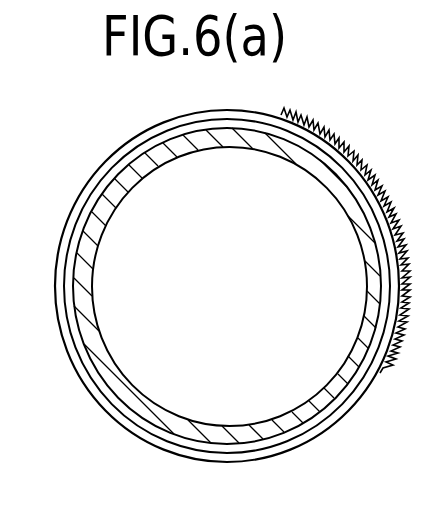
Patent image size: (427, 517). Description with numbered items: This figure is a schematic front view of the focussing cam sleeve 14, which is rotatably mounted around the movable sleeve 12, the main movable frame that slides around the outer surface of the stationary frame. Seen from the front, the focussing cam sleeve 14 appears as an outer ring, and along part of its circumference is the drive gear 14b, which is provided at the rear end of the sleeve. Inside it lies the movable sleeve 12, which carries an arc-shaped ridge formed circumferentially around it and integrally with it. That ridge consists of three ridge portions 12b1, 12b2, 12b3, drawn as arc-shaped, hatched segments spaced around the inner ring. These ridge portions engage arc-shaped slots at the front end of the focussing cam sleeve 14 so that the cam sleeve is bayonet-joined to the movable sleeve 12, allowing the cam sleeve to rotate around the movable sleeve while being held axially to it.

The focussing cam sleeve 14 is at (110, 157).
The drive gear 14b is at (355, 152).
The movable sleeve 12 is at (93, 342).
The ridge portion 12b1 is at (112, 180).
The ridge portion 12b2 is at (373, 252).
The ridge portion 12b3 is at (190, 437).